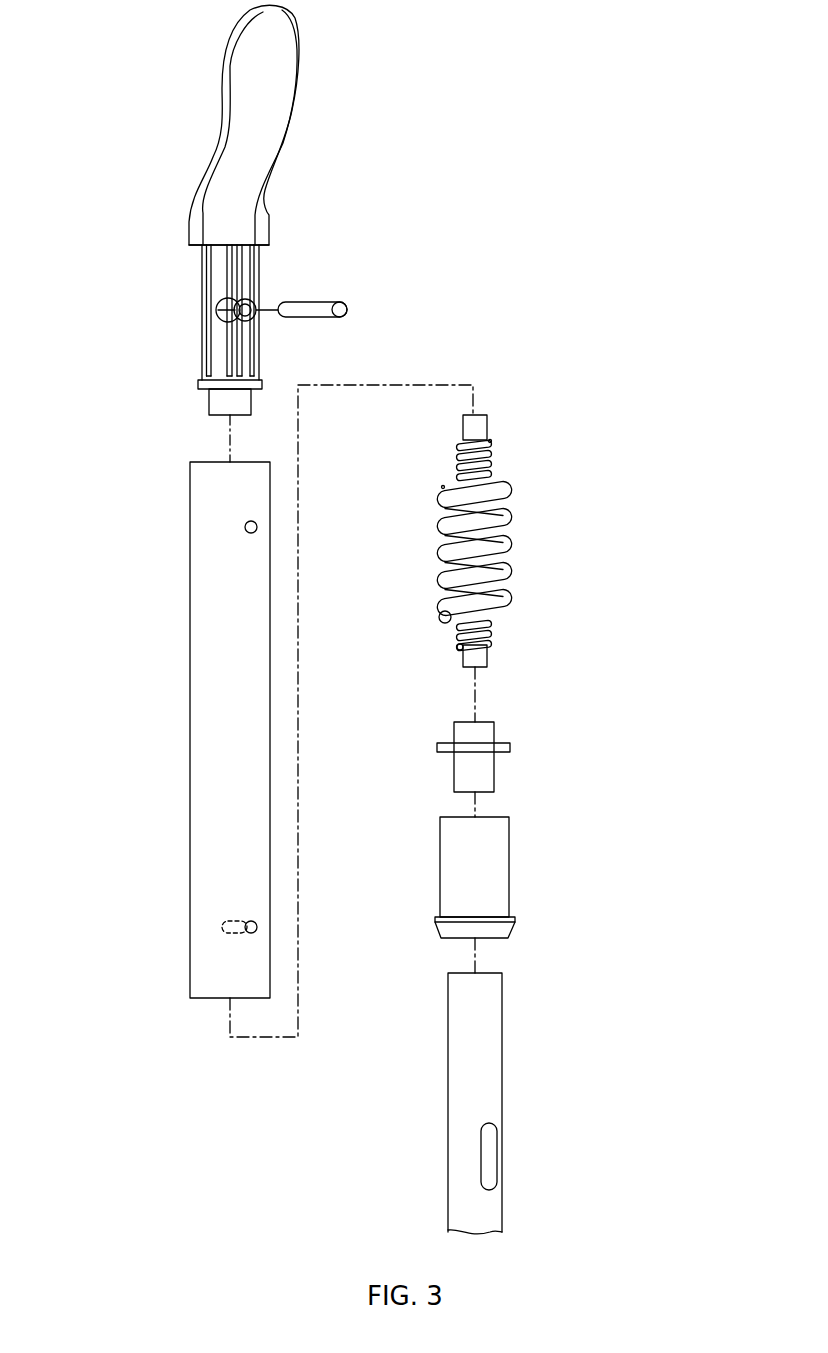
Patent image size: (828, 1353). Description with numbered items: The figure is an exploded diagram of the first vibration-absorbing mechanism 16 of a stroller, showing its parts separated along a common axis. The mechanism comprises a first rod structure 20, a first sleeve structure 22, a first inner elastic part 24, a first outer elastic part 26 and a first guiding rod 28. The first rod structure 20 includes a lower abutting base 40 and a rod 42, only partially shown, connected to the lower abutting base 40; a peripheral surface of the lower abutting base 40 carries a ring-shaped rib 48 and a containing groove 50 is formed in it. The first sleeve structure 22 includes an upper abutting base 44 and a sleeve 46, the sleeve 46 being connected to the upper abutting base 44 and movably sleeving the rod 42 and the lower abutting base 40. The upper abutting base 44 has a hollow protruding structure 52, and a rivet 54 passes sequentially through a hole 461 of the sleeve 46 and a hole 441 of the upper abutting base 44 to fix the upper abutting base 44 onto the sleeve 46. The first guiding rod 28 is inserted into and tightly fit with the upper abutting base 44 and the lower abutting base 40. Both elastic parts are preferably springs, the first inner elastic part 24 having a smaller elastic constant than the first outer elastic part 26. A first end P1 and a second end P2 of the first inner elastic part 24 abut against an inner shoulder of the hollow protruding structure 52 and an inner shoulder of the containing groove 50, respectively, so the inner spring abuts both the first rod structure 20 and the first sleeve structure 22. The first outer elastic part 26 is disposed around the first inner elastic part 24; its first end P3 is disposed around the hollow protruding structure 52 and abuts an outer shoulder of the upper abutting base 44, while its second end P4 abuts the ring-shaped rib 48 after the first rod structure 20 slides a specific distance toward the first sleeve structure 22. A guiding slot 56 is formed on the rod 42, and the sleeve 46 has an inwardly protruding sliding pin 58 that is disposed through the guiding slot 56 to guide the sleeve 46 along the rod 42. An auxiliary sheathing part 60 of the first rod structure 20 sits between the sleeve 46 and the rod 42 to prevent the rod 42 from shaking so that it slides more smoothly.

The first vibration-absorbing mechanism 16 is at (653, 940).
The first rod structure 20 is at (600, 827).
The first sleeve structure 22 is at (597, 252).
The first inner elastic part 24 is at (505, 457).
The first outer elastic part 26 is at (517, 527).
The first guiding rod 28 is at (477, 658).
The lower abutting base 40 is at (502, 780).
The rod 42 is at (492, 1003).
The upper abutting base 44 is at (247, 348).
The hole 441 is at (240, 303).
The sleeve 46 is at (243, 465).
The hole 461 is at (244, 527).
The ring-shaped rib 48 is at (437, 747).
The containing groove 50 is at (485, 722).
The hollow protruding structure 52 is at (213, 400).
The rivet 54 is at (325, 305).
The guiding slot 56 is at (490, 1160).
The sliding pin 58 is at (251, 935).
The auxiliary sheathing part 60 is at (498, 853).
The first end of the first inner elastic part P1 is at (490, 440).
The second end of the first inner elastic part P2 is at (458, 648).
The first end of the first outer elastic part P3 is at (443, 487).
The second end of the first outer elastic part P4 is at (441, 622).